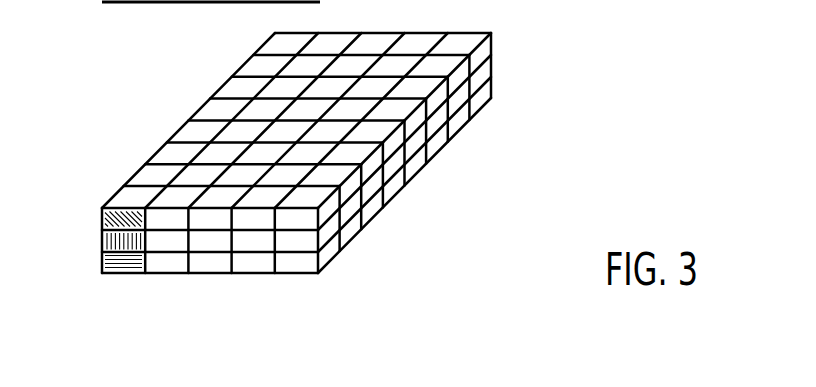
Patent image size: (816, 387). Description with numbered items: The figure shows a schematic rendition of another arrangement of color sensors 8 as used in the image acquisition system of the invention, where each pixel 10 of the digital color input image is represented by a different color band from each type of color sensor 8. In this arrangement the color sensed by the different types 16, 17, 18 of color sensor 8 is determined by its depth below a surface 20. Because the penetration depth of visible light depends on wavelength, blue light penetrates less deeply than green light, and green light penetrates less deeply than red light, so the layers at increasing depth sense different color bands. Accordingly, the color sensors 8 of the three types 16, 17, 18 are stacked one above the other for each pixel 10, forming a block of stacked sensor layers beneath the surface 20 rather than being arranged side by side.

The input pixel 10 is at (468, 32).
The surface 20 is at (158, 164).
The color sensor 8 is at (103, 222).
The first type of color sensor 16 is at (138, 243).
The second type of color sensor 17 is at (123, 267).
The third type of color sensor 18 is at (147, 223).